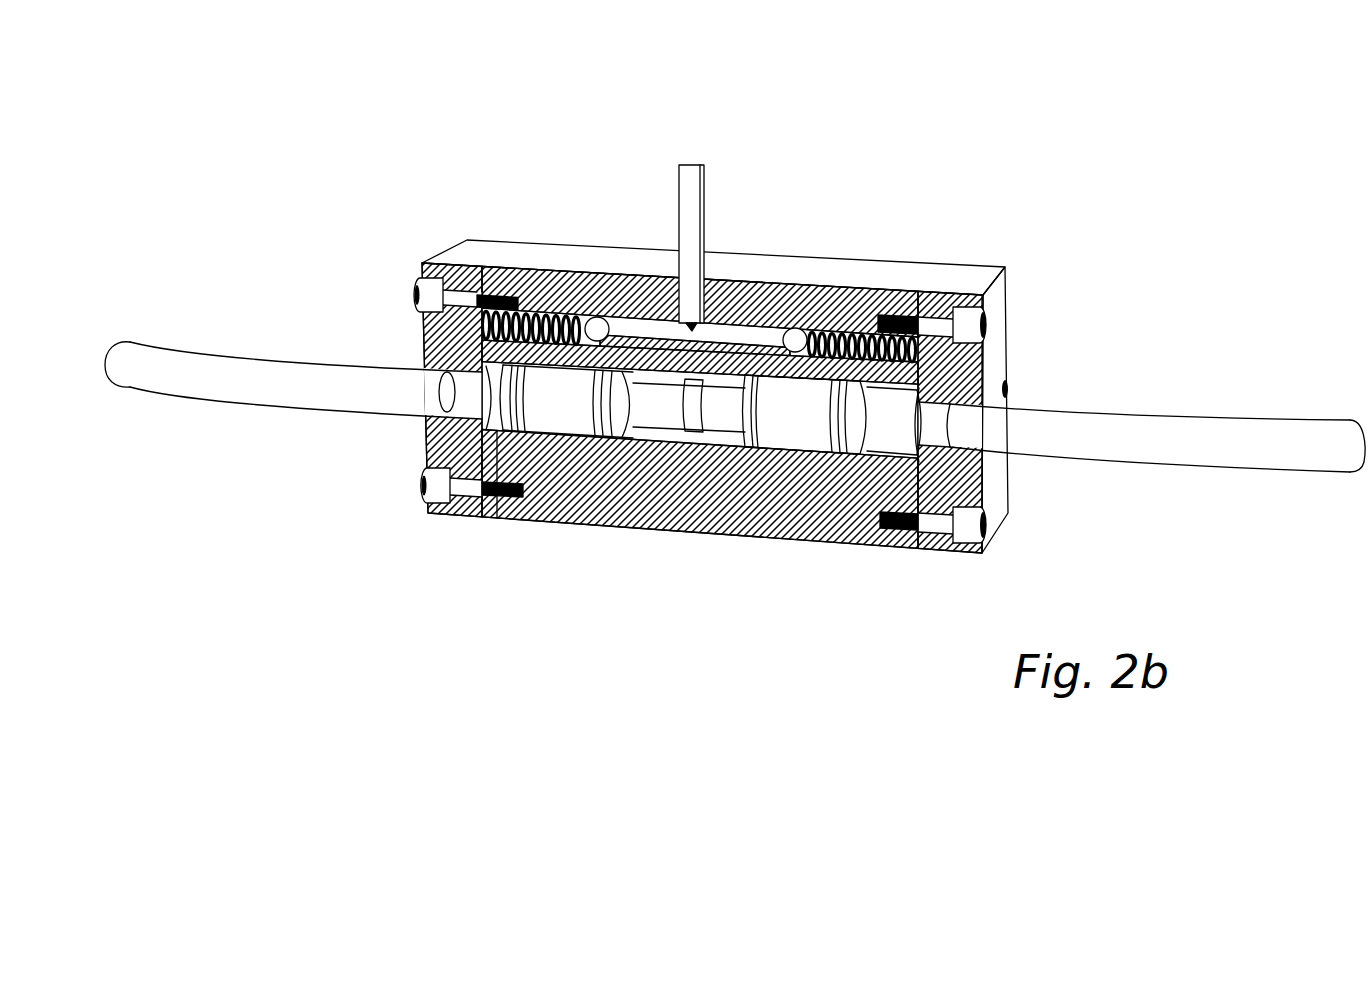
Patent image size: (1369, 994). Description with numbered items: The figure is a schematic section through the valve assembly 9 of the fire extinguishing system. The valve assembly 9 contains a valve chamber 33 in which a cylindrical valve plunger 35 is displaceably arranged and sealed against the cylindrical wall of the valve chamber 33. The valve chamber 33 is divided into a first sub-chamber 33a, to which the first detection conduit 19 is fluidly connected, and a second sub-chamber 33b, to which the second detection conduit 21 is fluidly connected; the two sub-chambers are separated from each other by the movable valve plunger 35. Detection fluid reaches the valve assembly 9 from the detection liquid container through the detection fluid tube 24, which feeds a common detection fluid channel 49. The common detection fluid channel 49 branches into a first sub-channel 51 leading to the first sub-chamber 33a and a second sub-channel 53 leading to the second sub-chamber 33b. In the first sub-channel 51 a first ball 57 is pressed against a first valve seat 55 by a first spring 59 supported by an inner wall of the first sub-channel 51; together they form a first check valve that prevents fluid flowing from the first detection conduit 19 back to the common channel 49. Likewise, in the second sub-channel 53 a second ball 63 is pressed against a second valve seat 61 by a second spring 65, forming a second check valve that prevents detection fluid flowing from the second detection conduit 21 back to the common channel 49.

The valve assembly 9 is at (580, 258).
The first detection conduit 19 is at (357, 377).
The second detection conduit 21 is at (1055, 423).
The detection fluid tube 24 is at (678, 177).
The valve chamber 33 is at (685, 500).
The first sub-chamber 33a is at (510, 500).
The second sub-chamber 33b is at (887, 437).
The valve plunger 35 is at (703, 410).
The common detection fluid channel 49 is at (712, 302).
The first sub-channel 51 is at (583, 276).
The second sub-channel 53 is at (925, 300).
The first valve seat 55 is at (696, 300).
The first ball 57 is at (606, 316).
The first spring 59 is at (548, 305).
The second valve seat 61 is at (797, 327).
The second ball 63 is at (826, 328).
The second spring 65 is at (870, 315).